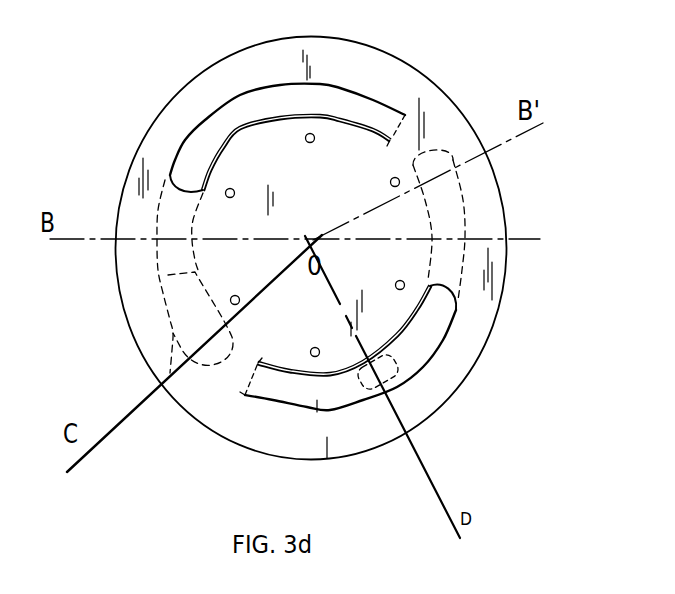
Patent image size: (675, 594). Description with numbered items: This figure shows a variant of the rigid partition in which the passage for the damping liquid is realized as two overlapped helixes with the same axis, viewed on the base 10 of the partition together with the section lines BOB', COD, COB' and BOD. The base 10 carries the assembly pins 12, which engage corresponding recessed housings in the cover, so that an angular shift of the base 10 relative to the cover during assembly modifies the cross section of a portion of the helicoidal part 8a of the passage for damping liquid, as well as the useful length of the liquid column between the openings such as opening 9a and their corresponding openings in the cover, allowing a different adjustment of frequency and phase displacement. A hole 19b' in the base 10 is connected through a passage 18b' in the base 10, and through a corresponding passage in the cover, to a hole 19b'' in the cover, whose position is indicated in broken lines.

The base 10 is at (485, 330).
The assembly pins 12 is at (303, 131).
The passage 18b' is at (296, 99).
The helicoidal part 8a is at (335, 393).
The opening 9a is at (444, 196).
The hole 19b' is at (184, 313).
The hole 19b'' is at (502, 419).